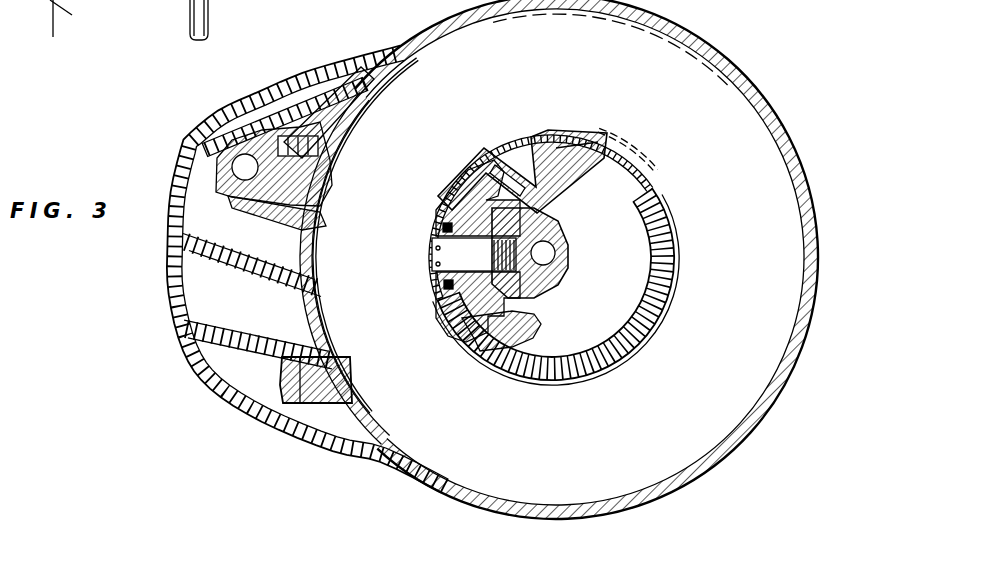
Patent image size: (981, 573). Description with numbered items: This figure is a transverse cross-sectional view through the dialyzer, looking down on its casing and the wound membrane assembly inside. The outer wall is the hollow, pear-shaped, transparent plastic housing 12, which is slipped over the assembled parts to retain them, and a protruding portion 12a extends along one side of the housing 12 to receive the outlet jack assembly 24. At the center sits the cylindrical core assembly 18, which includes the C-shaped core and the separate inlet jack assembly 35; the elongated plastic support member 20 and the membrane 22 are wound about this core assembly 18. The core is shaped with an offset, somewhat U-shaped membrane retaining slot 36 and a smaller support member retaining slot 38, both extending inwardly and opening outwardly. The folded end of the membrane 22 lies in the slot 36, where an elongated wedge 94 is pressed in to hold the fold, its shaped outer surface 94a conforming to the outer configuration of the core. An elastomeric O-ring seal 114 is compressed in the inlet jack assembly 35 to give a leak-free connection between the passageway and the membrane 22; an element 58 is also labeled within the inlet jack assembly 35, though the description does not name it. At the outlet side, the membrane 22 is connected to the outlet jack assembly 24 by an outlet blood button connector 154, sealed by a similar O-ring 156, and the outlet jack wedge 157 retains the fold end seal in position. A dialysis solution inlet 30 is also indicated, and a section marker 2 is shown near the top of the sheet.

The section line 2- 2 is at (71, 18).
The housing 12 is at (702, 35).
The protruding portion 12a is at (217, 403).
The core assembly 18 is at (545, 397).
The support member 20 is at (285, 75).
The membrane 22 is at (397, 81).
The outlet jack assembly 24 is at (214, 291).
The dialysis solution inlet 30 is at (222, 0).
The inlet jack assembly 35 is at (420, 253).
The membrane retaining slot 36 is at (602, 142).
The support member retaining slot 38 is at (526, 330).
The pivot block 58 is at (513, 207).
The wedge 94 is at (514, 147).
The shaped outer surface 94a is at (527, 143).
The O-ring seal 114 is at (443, 281).
The outlet blood button connector 154 is at (323, 210).
The O-ring 156 is at (347, 136).
The outlet jack wedge 157 is at (350, 383).